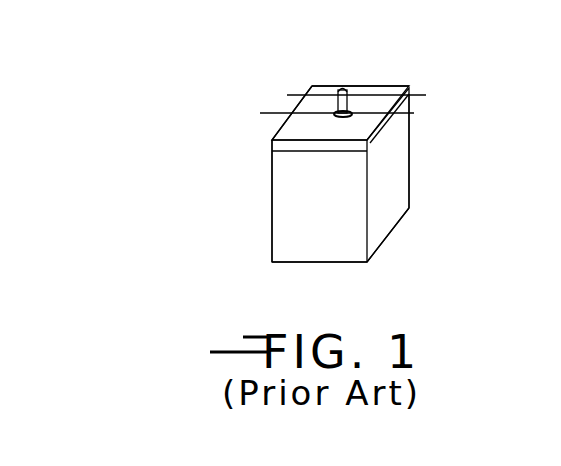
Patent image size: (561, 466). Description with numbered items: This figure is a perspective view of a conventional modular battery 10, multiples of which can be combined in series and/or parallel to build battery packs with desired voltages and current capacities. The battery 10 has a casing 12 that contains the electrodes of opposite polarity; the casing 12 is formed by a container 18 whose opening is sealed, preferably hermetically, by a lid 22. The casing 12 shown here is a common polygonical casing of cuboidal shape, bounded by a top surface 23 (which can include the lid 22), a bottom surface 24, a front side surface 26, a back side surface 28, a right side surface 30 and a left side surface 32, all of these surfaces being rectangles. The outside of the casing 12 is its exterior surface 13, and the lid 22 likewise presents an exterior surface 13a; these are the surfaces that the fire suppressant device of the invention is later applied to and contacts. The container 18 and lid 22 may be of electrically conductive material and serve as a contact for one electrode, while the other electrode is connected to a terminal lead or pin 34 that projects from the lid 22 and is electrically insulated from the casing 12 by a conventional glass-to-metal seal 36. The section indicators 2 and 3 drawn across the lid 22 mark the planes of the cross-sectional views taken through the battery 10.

The modular battery 10 is at (354, 154).
The casing 12 is at (339, 192).
The exterior surface 13 is at (329, 262).
The exterior surface of the lid 13a is at (273, 138).
The container 18 is at (410, 193).
The lid 22 is at (295, 82).
The top surface 23 is at (330, 136).
The bottom surface 24 is at (376, 250).
The front side surface 26 is at (326, 200).
The back side surface 28 is at (410, 132).
The right side surface 30 is at (402, 181).
The left side surface 32 is at (272, 227).
The terminal lead or pin 34 is at (390, 91).
The glass-to-metal seal 36 is at (349, 116).
The section line 2- 2 is at (277, 99).
The section line 3- 3 is at (287, 96).